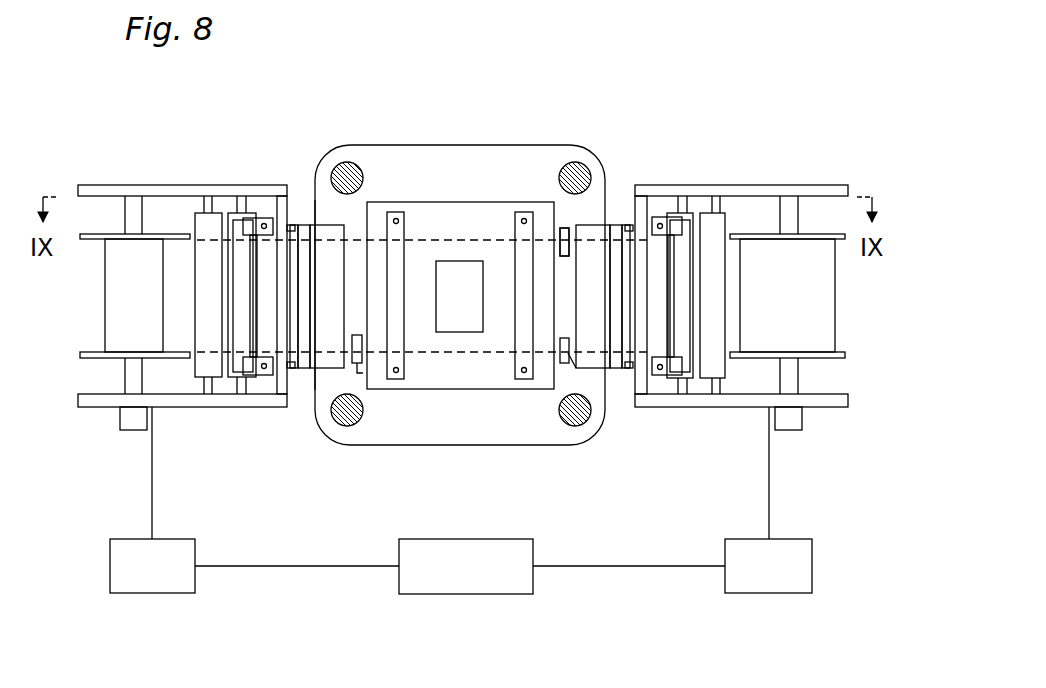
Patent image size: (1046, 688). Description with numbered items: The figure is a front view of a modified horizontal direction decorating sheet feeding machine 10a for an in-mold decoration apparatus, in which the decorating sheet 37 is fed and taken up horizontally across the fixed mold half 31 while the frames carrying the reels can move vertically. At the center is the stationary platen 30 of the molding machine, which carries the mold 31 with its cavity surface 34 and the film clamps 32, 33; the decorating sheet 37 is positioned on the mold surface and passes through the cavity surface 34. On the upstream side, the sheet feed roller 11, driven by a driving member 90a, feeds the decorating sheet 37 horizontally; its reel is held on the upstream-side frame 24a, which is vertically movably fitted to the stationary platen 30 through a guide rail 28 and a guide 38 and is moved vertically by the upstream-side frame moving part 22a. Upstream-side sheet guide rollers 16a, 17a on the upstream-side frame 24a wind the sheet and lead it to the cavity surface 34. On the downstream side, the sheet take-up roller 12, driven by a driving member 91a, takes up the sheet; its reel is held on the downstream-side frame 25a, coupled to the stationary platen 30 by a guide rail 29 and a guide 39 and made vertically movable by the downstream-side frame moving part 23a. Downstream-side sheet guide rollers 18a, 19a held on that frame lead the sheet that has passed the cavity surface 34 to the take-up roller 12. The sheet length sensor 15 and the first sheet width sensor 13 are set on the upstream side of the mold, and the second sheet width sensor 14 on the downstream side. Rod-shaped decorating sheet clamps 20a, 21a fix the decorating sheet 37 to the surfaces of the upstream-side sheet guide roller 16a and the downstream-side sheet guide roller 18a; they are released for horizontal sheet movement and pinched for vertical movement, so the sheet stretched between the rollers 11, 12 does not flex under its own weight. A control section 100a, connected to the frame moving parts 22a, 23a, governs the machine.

The horizontal direction decorating sheet feeding machine 10a is at (688, 92).
The sheet feed roller 11 is at (822, 233).
The sheet take-up roller 12 is at (115, 232).
The first sheet width sensor 13 is at (580, 369).
The second sheet width sensor 14 is at (315, 372).
The sheet length sensor 15 is at (566, 228).
The upstream-side sheet guide roller 16a is at (693, 212).
The upstream-side sheet guide roller 17a is at (722, 212).
The downstream-side sheet guide roller 18a is at (258, 212).
The downstream-side sheet guide roller 19a is at (196, 212).
The decorating sheet clamp 20a is at (690, 348).
The decorating sheet clamp 21a is at (230, 362).
The upstream-side frame moving part 22a is at (802, 583).
The downstream-side frame moving part 23a is at (127, 582).
The upstream-side frame 24a is at (807, 410).
The downstream-side frame 25a is at (93, 408).
The guide rail 28 is at (614, 362).
The guide rail 29 is at (304, 373).
The stationary platen 30 is at (528, 447).
The fixed mold half 31 is at (414, 392).
The film clamp 32 is at (526, 210).
The film clamp 33 is at (396, 217).
The cavity surface 34 is at (457, 260).
The decorating sheet 37 is at (460, 360).
The guide 38 is at (628, 372).
The guide 39 is at (288, 366).
The driving member 90a is at (788, 435).
The driving member 91a is at (130, 430).
The control section 100a is at (520, 583).